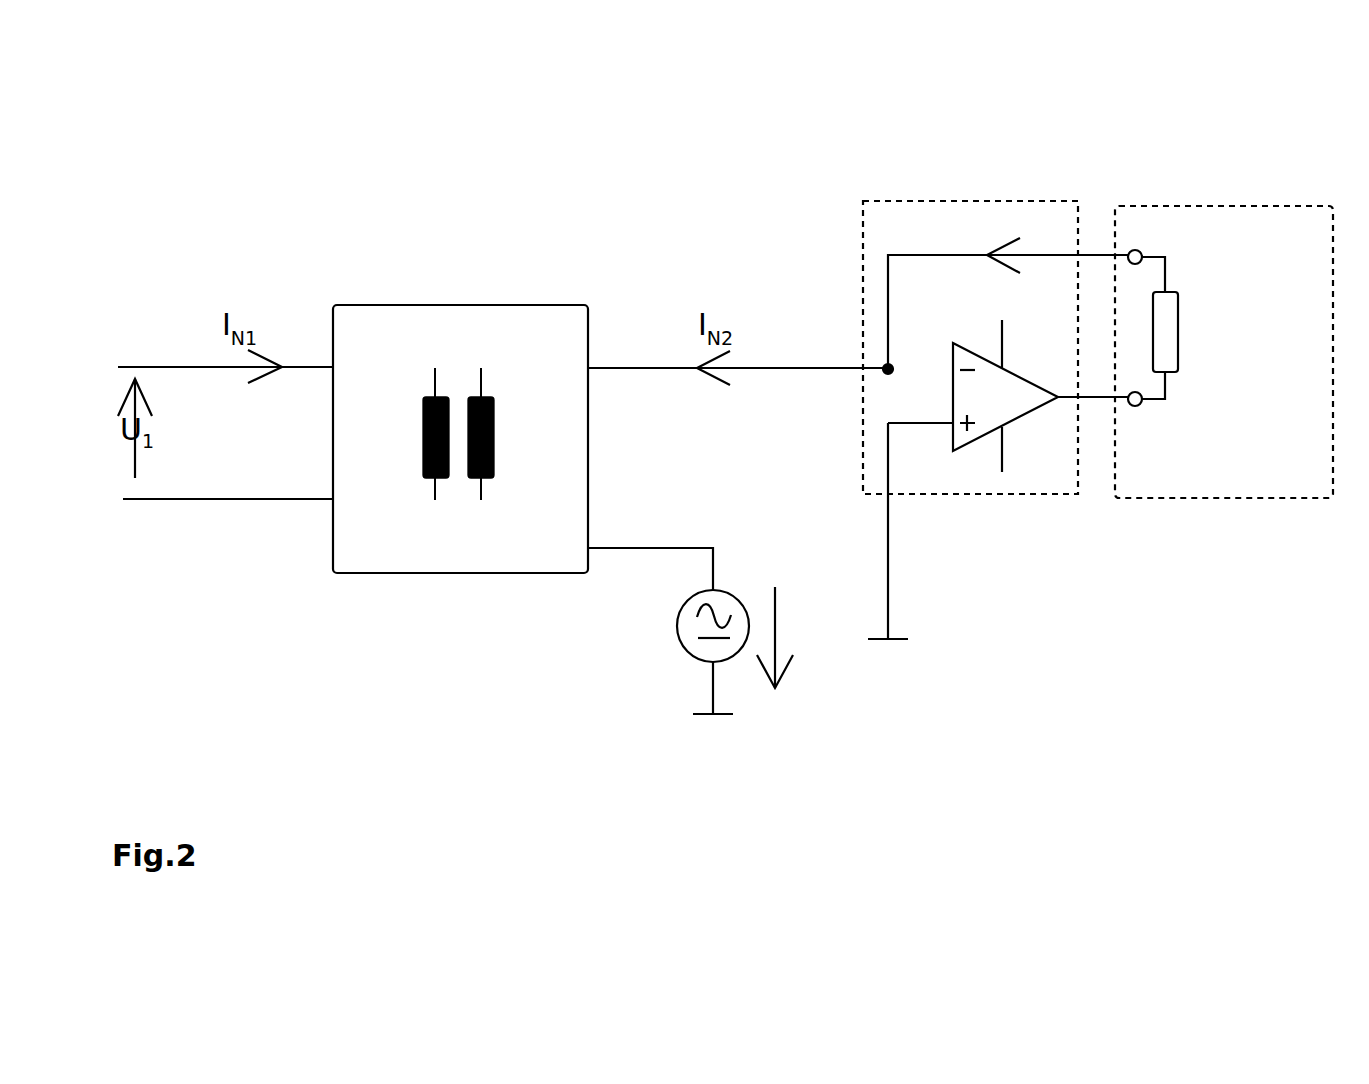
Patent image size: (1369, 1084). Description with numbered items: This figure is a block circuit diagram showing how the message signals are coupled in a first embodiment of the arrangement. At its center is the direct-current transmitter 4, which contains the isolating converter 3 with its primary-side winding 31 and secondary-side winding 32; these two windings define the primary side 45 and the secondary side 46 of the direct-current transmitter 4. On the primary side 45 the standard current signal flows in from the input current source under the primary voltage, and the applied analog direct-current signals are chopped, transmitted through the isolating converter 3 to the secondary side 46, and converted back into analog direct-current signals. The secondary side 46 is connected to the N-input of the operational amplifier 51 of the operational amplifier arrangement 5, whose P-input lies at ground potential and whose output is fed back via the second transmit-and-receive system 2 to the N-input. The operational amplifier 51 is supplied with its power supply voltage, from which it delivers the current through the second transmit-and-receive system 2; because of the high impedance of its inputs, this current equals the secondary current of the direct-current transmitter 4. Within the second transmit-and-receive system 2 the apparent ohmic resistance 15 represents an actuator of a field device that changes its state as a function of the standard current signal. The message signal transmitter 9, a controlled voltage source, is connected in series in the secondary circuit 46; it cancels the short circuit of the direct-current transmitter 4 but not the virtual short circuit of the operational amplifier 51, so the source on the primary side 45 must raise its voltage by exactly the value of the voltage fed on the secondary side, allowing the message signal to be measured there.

The second transmit-and-receive system 2 is at (1198, 207).
The isolating converter 3 is at (465, 353).
The direct-current transmitter 4 is at (565, 305).
The operational amplifier arrangement 5 is at (905, 200).
The message signal transmitter 9 is at (737, 663).
The apparent ohmic resistance 15 is at (1168, 352).
The primary-side winding 31 is at (423, 478).
The secondary-side winding 32 is at (493, 478).
The primary side 45 is at (355, 435).
The secondary side 46 is at (558, 433).
The operational amplifier 51 is at (993, 405).